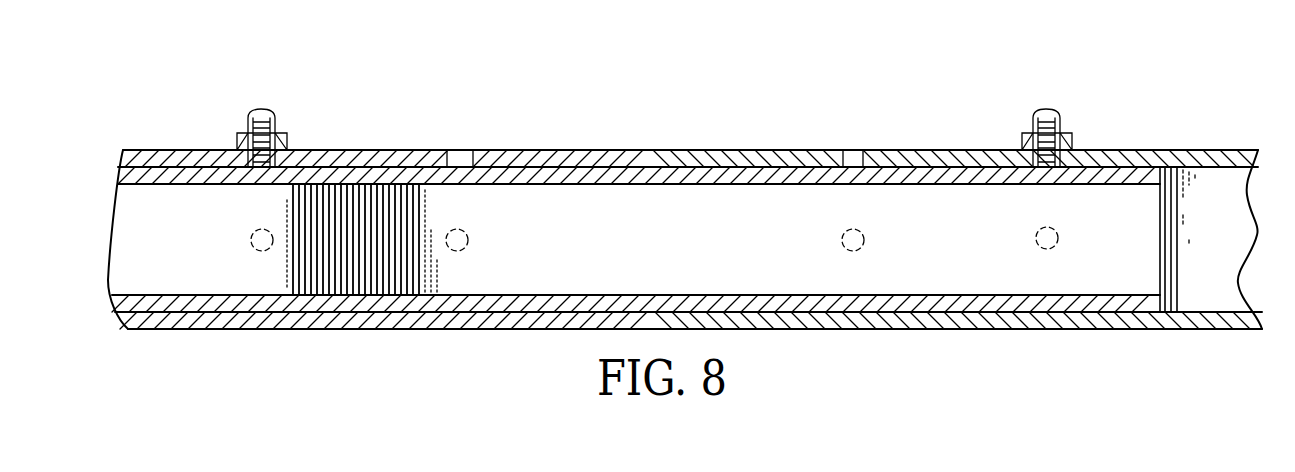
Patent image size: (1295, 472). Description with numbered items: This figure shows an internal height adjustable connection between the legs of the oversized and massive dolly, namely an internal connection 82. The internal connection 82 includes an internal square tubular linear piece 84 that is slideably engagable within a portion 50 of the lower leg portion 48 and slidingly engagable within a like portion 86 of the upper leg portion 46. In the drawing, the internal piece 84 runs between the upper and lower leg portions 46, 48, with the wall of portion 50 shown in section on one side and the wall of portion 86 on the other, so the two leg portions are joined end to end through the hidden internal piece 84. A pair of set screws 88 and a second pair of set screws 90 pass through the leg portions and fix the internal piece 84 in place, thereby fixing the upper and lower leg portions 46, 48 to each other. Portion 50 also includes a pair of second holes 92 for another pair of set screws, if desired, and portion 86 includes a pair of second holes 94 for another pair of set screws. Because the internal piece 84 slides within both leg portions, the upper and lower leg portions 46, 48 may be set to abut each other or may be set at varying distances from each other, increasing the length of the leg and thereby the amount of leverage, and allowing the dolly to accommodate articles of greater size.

The internal connection 82 is at (75, 222).
The lower leg portion 48 is at (150, 150).
The portion of lower leg portion 50 is at (196, 330).
The upper leg portion 46 is at (1200, 329).
The internal square tubular linear piece 84 is at (721, 150).
The portion of upper leg portion 86 is at (932, 150).
The set screws 88 is at (1050, 108).
The second pair of set screws 90 is at (260, 108).
The second holes 92 is at (456, 150).
The second holes 94 is at (852, 150).